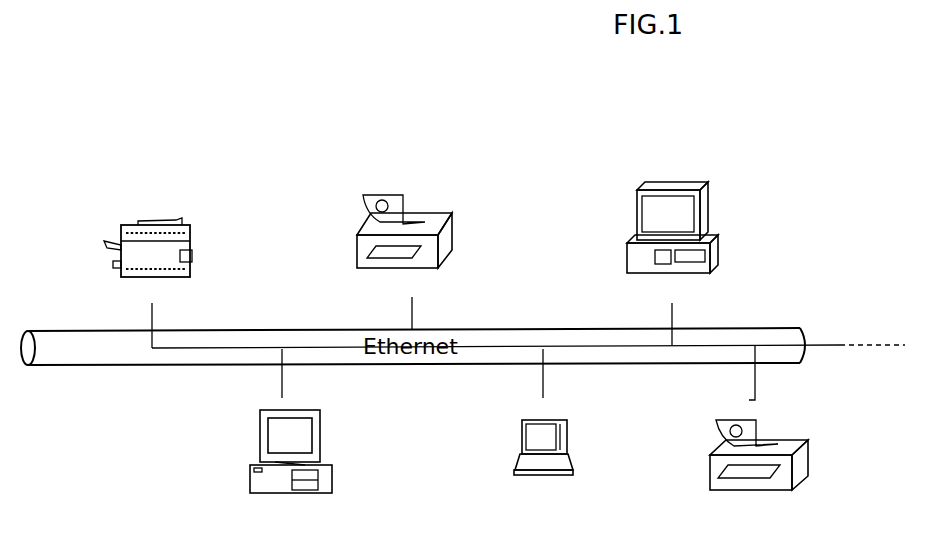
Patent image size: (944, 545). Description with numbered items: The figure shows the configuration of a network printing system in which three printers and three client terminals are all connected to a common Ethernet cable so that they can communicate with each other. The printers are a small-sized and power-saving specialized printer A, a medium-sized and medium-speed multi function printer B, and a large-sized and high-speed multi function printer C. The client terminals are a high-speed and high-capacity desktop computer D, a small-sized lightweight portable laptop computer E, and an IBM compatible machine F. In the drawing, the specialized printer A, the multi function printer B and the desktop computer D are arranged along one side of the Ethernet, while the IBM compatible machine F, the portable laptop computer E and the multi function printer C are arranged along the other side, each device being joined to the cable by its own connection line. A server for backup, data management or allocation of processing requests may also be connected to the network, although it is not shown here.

The specialized printer A is at (161, 262).
The MFP (multi function printer) B is at (421, 253).
The MFP (multi function printer) C is at (776, 435).
The desktop computer D is at (686, 263).
The portable laptop computer E is at (547, 426).
The IBM compatible machine F is at (292, 434).